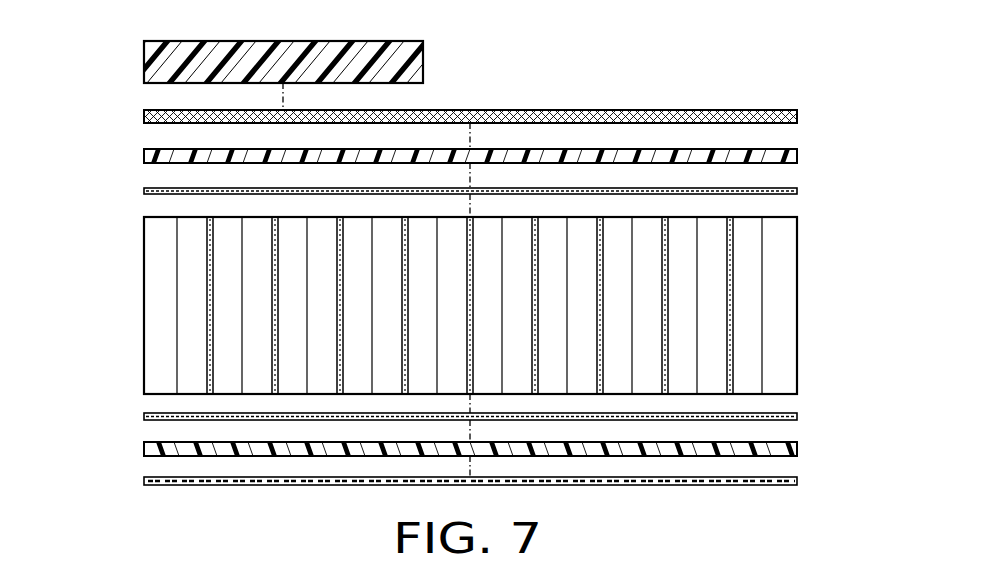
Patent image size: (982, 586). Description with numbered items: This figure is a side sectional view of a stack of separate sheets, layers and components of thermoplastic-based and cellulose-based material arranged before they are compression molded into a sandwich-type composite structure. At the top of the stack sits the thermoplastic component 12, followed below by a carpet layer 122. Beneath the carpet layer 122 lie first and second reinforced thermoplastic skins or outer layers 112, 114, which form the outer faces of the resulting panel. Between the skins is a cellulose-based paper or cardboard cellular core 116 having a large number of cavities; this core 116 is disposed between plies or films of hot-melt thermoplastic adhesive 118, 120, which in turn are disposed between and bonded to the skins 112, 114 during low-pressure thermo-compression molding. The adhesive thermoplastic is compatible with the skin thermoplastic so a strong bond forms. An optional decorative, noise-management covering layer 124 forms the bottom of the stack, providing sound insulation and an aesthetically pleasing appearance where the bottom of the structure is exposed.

The thermoplastic component 12 is at (424, 62).
The first reinforced thermoplastic skin 112 is at (144, 157).
The second reinforced thermoplastic skin 114 is at (144, 445).
The cellular core 116 is at (144, 306).
The hot-melt adhesive sheet 118 is at (144, 191).
The hot-melt adhesive sheet 120 is at (144, 414).
The carpet layer 122 is at (144, 116).
The covering layer 124 is at (144, 479).